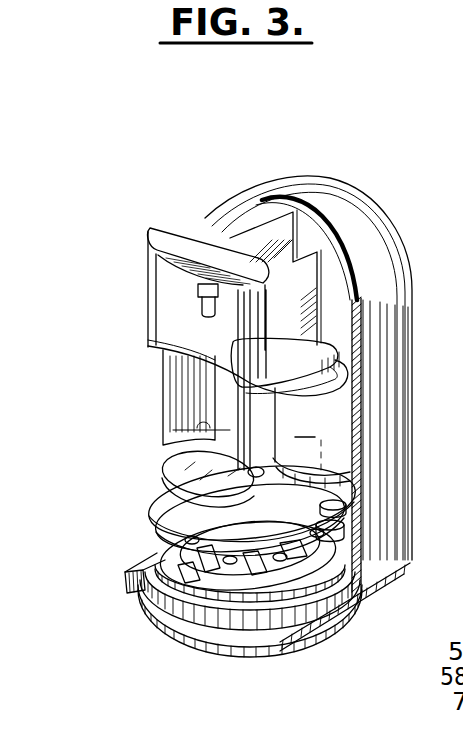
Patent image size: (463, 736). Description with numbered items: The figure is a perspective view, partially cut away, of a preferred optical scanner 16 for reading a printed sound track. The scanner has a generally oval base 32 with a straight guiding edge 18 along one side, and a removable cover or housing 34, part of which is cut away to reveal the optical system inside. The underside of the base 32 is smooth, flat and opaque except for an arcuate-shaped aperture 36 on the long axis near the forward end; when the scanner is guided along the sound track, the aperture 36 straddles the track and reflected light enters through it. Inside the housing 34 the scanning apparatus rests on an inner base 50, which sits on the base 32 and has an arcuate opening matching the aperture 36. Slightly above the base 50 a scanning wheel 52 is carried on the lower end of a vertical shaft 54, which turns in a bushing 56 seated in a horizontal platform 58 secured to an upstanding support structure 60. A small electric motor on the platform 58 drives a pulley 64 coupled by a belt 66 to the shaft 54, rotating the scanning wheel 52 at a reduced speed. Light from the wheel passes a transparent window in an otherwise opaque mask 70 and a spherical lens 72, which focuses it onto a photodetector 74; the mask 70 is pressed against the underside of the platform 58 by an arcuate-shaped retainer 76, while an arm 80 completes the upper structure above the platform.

The motor drive assembly 16 is at (102, 266).
The straight guiding edge 18 is at (124, 577).
The base 32 is at (322, 628).
The cover or housing 34 is at (404, 382).
The aperture 36 is at (163, 620).
The base 50 is at (262, 616).
The scanning wheel 52 is at (300, 572).
The shaft 54 is at (240, 400).
The bushing 56 is at (265, 474).
The platform 58 is at (165, 456).
The support structure 60 is at (165, 378).
The pulley 64 is at (350, 538).
The belt 66 is at (350, 511).
The mask 70 is at (172, 516).
The spherical lens 72 is at (162, 491).
The photodetector 74 is at (200, 307).
The arcuate-shaped retainer 76 is at (185, 542).
The arm 80 is at (245, 246).